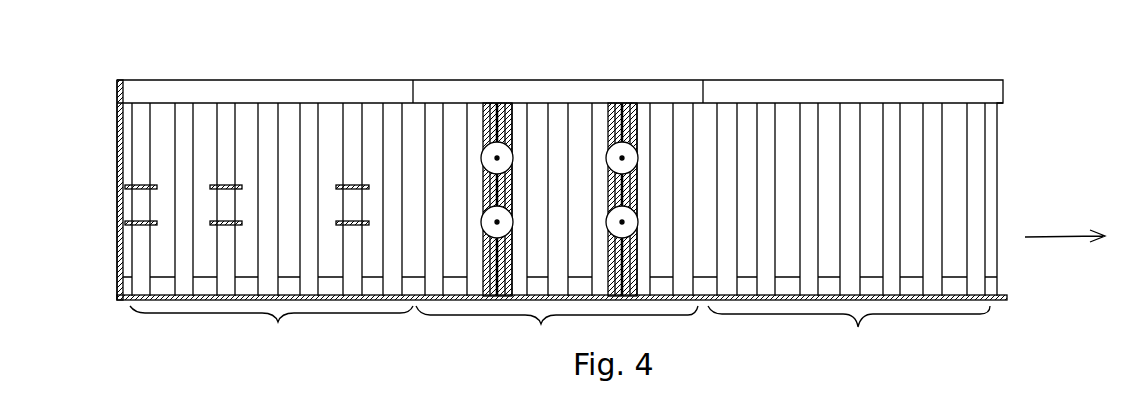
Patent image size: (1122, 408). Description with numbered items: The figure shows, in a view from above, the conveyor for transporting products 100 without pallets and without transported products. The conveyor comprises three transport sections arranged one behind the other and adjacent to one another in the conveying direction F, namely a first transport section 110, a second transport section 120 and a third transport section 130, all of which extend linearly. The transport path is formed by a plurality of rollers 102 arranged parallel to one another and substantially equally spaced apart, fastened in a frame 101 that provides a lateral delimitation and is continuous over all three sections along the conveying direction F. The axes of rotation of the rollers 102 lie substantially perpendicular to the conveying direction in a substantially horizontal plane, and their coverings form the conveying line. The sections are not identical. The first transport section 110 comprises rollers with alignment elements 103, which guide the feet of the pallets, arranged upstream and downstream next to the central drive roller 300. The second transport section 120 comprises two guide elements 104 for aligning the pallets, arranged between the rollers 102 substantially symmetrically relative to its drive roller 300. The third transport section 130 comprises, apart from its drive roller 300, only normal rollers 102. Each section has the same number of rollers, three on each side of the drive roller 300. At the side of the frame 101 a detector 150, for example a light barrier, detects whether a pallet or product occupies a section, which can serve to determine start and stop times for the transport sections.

The conveyor for transporting products 100 is at (1100, 188).
The frame 101 is at (117, 88).
The rollers 102 is at (183, 110).
The rollers having alignment elements 103 is at (230, 113).
The guide elements 104 is at (495, 105).
The first transport section 110 is at (271, 330).
The second transport section 120 is at (557, 327).
The third transport section 130 is at (849, 334).
The detector 150 is at (128, 304).
The drive roller 300 is at (275, 113).